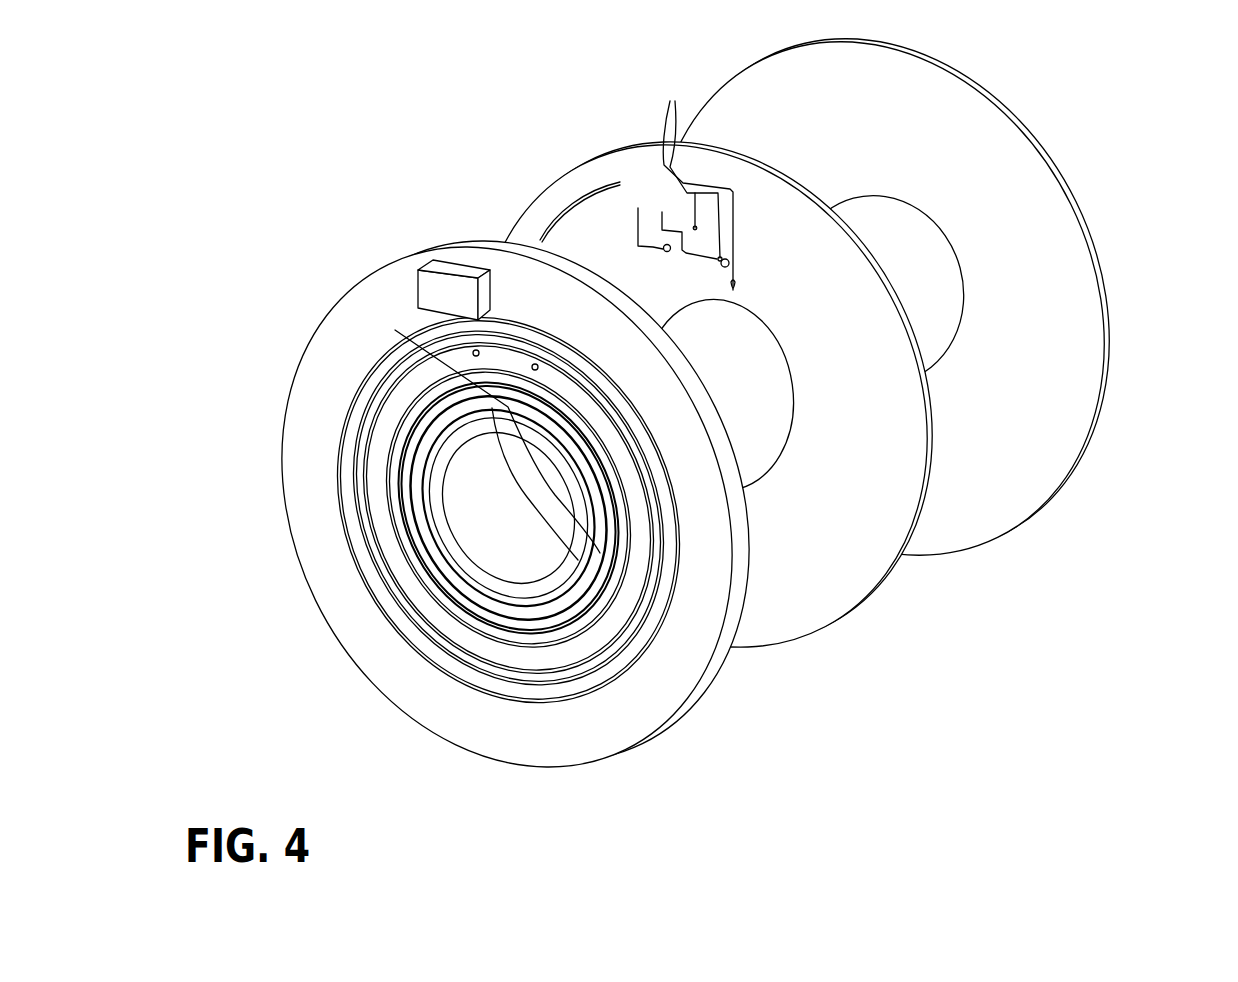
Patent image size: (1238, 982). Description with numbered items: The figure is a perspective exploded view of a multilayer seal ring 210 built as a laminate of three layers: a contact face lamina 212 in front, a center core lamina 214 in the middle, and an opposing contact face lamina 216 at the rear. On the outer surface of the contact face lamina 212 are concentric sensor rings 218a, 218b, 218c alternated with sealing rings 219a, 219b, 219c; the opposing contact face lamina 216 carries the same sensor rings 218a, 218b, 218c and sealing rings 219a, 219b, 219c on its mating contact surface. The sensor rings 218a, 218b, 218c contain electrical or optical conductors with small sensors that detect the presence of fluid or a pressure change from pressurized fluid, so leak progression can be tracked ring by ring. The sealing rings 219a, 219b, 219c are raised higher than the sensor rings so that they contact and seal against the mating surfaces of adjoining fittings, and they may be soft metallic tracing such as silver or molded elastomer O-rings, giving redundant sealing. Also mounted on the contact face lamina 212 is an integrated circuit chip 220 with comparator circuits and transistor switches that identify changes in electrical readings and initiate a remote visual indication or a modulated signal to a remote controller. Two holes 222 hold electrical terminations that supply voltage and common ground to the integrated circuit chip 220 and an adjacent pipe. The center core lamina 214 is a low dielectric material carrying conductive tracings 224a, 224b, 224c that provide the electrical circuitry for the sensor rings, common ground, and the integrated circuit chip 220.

The seal ring 210 is at (1095, 794).
The contact face lamina 212 is at (357, 633).
The center core lamina 214 is at (807, 598).
The opposing contact face lamina 216 is at (1067, 277).
The sensor ring 218a is at (402, 443).
The sensor ring 218b is at (367, 452).
The sensor ring 218c is at (338, 497).
The sealing ring 219a is at (421, 388).
The sealing ring 219b is at (373, 392).
The sealing ring 219c is at (385, 393).
The integrated circuit chip 220 is at (433, 272).
The holes 222 is at (533, 364).
The conductive tracing 224a is at (582, 195).
The conductive tracing 224b is at (691, 176).
The conductive tracing 224c is at (655, 258).